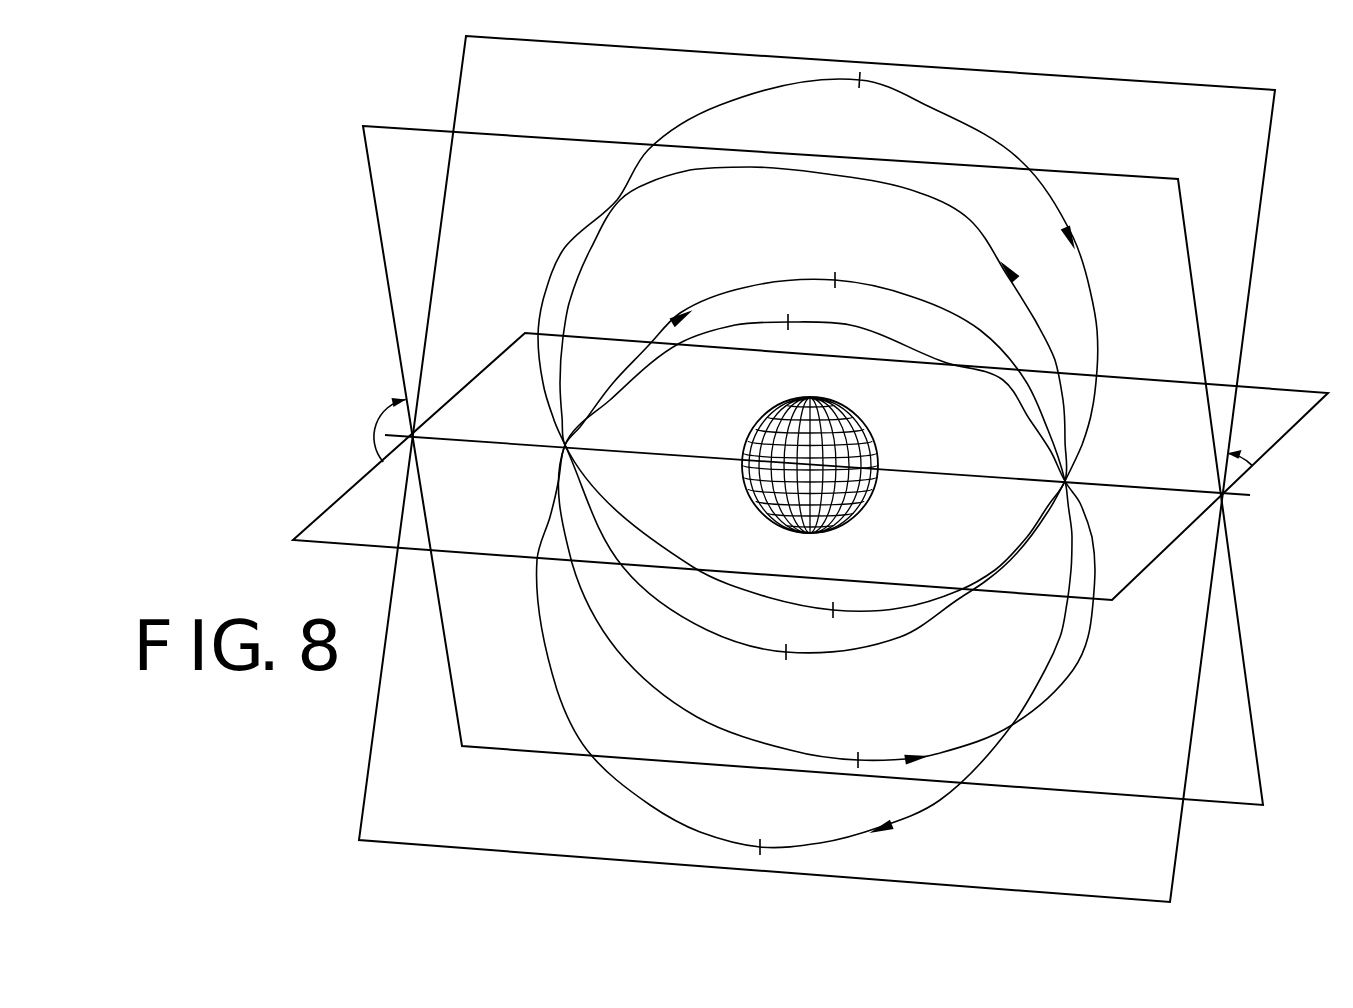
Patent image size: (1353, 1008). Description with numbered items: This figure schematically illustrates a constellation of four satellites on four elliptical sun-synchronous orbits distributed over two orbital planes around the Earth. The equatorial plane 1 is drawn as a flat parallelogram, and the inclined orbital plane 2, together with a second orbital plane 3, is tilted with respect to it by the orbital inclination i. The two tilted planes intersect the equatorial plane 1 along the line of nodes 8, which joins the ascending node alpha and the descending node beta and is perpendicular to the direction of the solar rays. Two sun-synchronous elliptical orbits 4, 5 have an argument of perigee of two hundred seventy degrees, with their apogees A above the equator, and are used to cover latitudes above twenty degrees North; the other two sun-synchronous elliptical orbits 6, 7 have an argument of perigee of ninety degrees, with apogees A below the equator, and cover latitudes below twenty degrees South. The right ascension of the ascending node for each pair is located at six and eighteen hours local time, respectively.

The equatorial plane 1 is at (810, 466).
The orbital plane 2 is at (813, 465).
The second orbital plane 3 is at (817, 469).
The sun-synchronous elliptical orbit 4 is at (813, 406).
The sun-synchronous elliptical orbit 5 is at (818, 384).
The sun-synchronous elliptical orbit 6 is at (826, 541).
The sun-synchronous elliptical orbit 7 is at (804, 548).
The line of nodes 8 is at (497, 437).